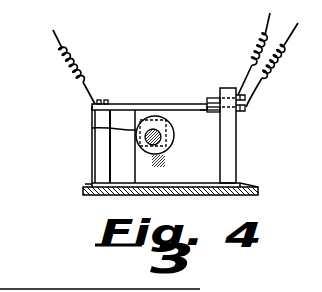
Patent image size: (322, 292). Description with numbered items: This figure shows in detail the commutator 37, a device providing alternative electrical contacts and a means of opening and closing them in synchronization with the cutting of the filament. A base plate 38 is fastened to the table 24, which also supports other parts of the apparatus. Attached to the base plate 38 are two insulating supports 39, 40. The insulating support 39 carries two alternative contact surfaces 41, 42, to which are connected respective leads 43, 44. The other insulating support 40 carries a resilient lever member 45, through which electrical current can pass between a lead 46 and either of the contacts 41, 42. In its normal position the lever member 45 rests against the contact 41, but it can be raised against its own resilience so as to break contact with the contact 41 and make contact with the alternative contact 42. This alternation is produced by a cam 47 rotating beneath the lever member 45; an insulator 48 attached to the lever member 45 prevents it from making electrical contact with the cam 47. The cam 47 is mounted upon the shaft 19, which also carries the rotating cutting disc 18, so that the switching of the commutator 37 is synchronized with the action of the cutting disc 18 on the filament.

The rotating disc 18 is at (312, 180).
The shaft 19 is at (160, 142).
The table 24 is at (248, 189).
The commutator 37 is at (132, 80).
The base plate 38 is at (89, 185).
The insulating support 39 is at (232, 141).
The insulating support 40 is at (103, 157).
The contact surface 41 is at (212, 112).
The contact surface 42 is at (219, 95).
The lead 43 is at (289, 46).
The lead 44 is at (259, 41).
The resilient lever member 45 is at (189, 104).
The lead 46 is at (80, 84).
The cam 47 is at (92, 128).
The insulator 48 is at (160, 116).